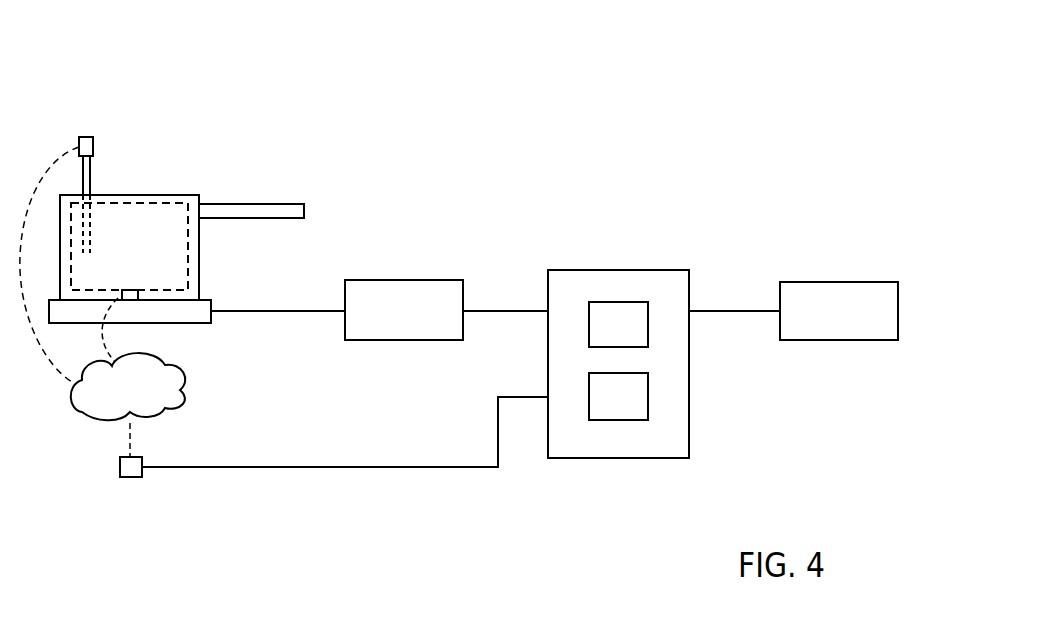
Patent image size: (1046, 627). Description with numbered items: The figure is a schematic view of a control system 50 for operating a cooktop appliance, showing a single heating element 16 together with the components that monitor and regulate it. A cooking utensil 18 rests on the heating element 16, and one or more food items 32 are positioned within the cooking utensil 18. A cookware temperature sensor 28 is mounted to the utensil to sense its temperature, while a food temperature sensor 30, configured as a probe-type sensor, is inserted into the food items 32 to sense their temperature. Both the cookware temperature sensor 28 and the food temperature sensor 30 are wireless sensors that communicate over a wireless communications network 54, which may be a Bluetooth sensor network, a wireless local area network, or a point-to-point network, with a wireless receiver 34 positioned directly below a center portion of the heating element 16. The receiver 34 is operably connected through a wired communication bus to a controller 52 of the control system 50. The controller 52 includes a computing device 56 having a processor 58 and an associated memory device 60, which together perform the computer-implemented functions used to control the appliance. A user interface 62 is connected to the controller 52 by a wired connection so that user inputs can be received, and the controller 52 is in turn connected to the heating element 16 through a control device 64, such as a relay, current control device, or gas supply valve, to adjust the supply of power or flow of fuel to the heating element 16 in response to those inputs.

The heating element 16 is at (201, 298).
The cooking utensil 18 is at (170, 195).
The cookware temperature sensor 28 is at (138, 295).
The food temperature sensor 30 is at (86, 137).
The food items 32 is at (112, 202).
The receiver 34 is at (125, 477).
The control system 50 is at (478, 93).
The controller 52 is at (640, 198).
The wireless communications network 54 is at (100, 408).
The computing device 56 is at (689, 293).
The processor 58 is at (640, 336).
The memory device 60 is at (640, 410).
The user interface 62 is at (830, 283).
The control device 64 is at (392, 282).